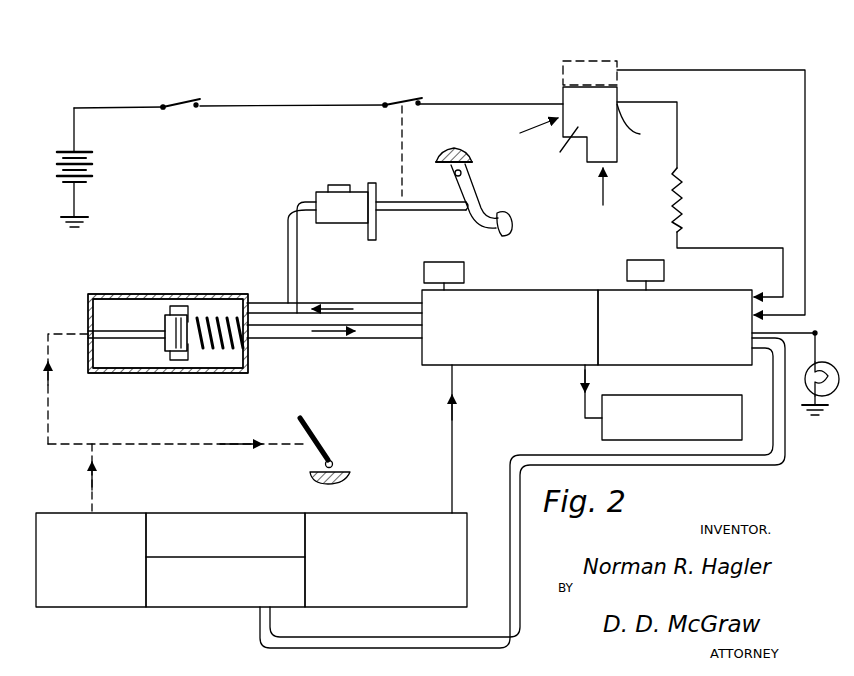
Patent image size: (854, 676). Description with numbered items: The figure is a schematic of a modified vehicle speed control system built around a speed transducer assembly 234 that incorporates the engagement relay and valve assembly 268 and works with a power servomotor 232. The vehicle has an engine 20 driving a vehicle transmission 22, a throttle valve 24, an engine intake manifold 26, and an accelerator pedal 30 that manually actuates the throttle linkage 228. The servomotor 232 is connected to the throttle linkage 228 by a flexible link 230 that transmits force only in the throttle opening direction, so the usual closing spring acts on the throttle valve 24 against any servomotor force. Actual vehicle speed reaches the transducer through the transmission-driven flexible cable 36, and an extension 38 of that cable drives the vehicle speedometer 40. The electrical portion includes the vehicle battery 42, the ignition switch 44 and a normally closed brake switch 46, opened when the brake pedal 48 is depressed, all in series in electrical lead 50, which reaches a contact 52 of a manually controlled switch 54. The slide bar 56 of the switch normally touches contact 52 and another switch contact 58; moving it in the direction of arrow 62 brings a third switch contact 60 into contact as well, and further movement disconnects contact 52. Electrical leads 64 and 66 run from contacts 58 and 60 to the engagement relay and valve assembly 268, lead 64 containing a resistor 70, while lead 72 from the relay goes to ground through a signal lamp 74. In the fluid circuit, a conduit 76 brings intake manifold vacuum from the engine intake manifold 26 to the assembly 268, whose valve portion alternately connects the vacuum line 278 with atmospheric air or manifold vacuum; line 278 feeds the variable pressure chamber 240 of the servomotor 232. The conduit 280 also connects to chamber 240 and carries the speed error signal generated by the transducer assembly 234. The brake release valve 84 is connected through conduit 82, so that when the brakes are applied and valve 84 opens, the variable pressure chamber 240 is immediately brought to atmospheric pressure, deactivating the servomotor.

The engine 20 is at (268, 515).
The vehicle transmission 22 is at (398, 512).
The throttle valve 24 is at (127, 518).
The engine intake manifold 26 is at (236, 608).
The accelerator pedal 30 is at (304, 420).
The flexible cable 36 is at (452, 437).
The extension 38 is at (584, 414).
The vehicle speedometer 40 is at (712, 395).
The vehicle battery 42 is at (88, 163).
The ignition switch 44 is at (180, 110).
The normally closed switch 46 is at (396, 100).
The brake pedal 48 is at (512, 226).
The electrical lead 50 is at (455, 103).
The contact 52 is at (560, 102).
The manually controlled switch 54 is at (528, 128).
The slide bar 56 is at (557, 150).
The switch contact 58 is at (640, 127).
The third switch contact 60 is at (617, 68).
The arrow 62 is at (605, 200).
The electrical lead 64 is at (678, 132).
The electrical lead 66 is at (750, 69).
The resistor 70 is at (682, 200).
The lead 72 is at (758, 334).
The signal lamp 74 is at (816, 357).
The conduit 76 is at (548, 456).
The conduit 82 is at (297, 273).
The brake release valve 84 is at (350, 190).
The throttle linkage 228 is at (158, 443).
The flexible link 230 is at (47, 420).
The power servomotor 232 is at (124, 292).
The speed transducer assembly 234 is at (570, 290).
The variable pressure chamber 240 is at (220, 303).
The engagement relay and valve assembly 268 is at (693, 290).
The vacuum line 278 is at (373, 327).
The conduit 280 is at (367, 300).